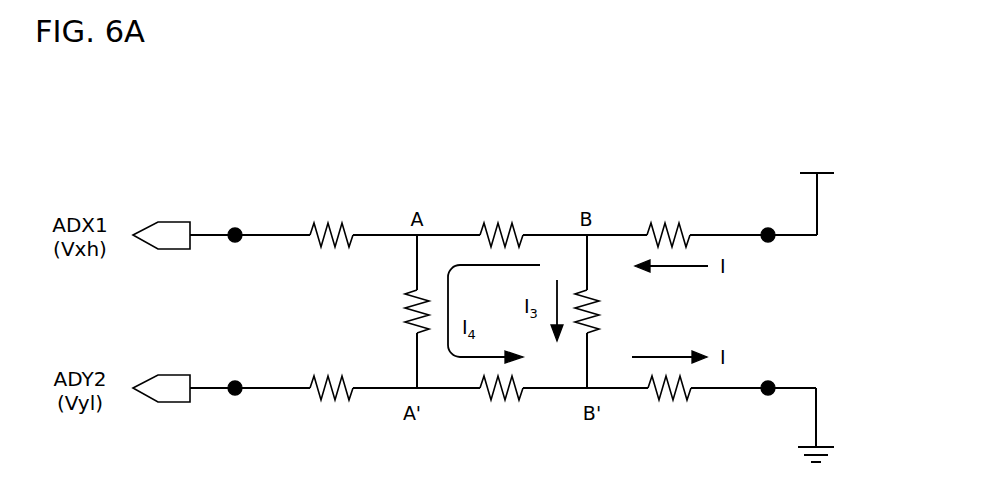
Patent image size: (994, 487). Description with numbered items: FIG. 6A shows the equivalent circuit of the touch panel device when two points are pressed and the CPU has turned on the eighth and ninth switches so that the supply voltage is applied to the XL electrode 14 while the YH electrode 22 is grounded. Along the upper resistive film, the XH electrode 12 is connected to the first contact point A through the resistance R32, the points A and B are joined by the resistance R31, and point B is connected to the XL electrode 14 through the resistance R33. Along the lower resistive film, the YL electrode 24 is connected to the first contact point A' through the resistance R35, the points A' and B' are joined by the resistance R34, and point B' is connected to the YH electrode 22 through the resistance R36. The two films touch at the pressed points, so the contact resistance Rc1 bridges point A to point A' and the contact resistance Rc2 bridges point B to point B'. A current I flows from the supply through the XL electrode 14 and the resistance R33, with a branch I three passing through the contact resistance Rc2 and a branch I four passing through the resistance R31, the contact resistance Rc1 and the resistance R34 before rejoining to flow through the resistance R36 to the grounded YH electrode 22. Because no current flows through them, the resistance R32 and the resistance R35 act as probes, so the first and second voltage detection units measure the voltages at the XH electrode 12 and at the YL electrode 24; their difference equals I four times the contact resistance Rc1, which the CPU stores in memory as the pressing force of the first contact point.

The XH electrode 12 is at (235, 227).
The XL electrode 14 is at (768, 229).
The YH electrode 22 is at (768, 380).
The YL electrode 24 is at (235, 380).
The resistance between points A and B R31 is at (502, 217).
The resistance between XH electrode and point A R32 is at (363, 217).
The resistance between XL electrode and point B R33 is at (702, 217).
The resistance between points A' and B' R34 is at (502, 406).
The resistance between YL electrode and point A' R35 is at (363, 406).
The resistance between YH electrode and point B' R36 is at (701, 406).
The contact resistance Rc1 is at (388, 311).
The contact resistance Rc2 is at (611, 311).